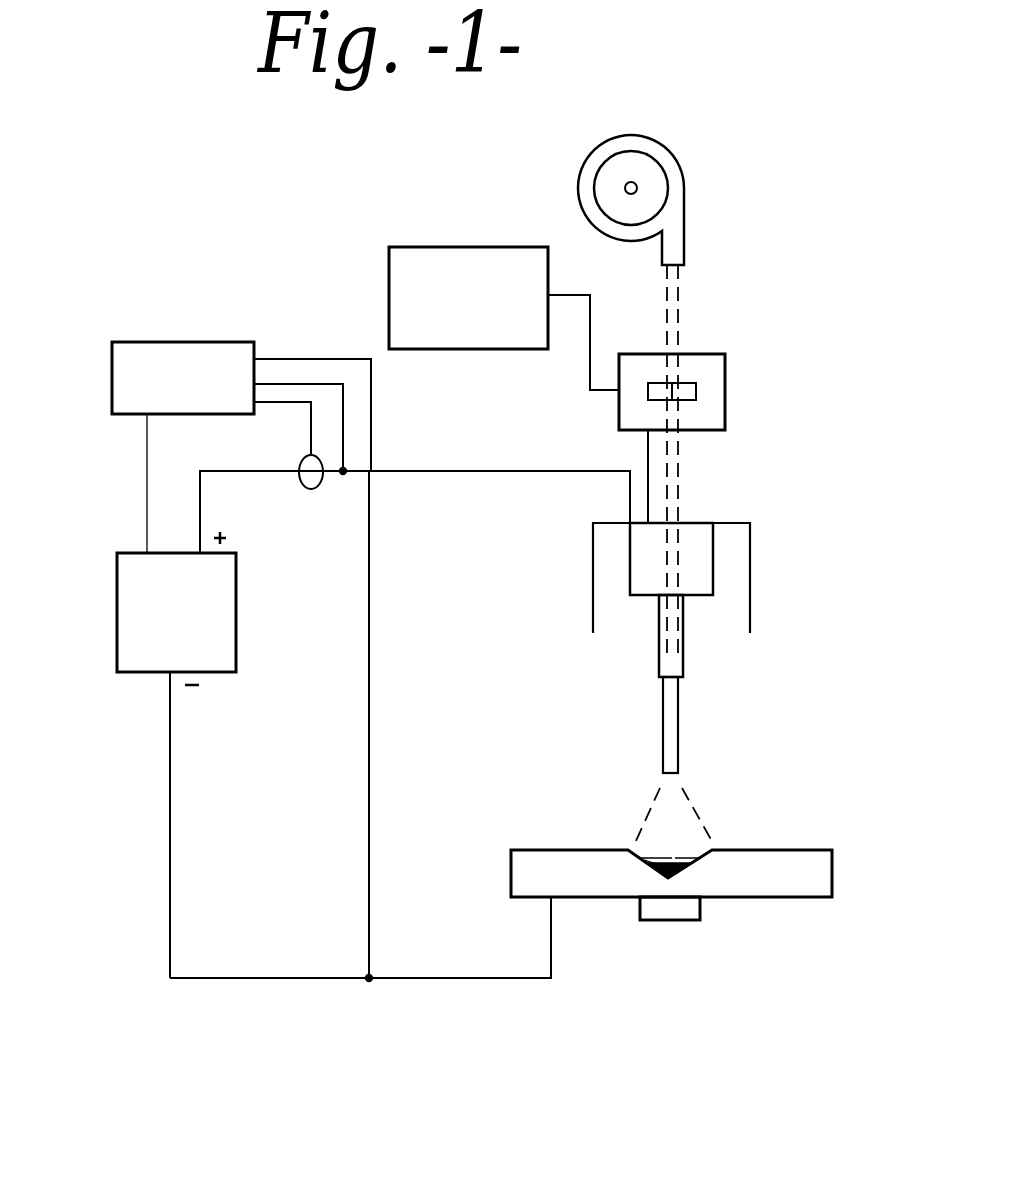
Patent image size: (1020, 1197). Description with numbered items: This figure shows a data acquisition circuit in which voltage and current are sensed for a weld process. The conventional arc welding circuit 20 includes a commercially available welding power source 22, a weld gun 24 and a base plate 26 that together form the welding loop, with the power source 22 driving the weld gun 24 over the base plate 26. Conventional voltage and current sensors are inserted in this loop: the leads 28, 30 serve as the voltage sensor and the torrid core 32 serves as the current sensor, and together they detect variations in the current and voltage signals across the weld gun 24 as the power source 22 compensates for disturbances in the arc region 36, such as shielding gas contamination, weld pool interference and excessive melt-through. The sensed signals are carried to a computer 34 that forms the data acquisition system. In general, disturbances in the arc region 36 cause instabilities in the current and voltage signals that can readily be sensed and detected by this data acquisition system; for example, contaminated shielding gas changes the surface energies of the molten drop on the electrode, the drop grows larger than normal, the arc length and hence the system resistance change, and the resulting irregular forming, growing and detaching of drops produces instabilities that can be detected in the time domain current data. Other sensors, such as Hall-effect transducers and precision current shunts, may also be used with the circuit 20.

The arc welding circuit 20 is at (447, 210).
The welding power source 22 is at (117, 626).
The weld gun 24 is at (700, 511).
The base plate 26 is at (742, 897).
The lead 28 is at (369, 633).
The lead 30 is at (273, 384).
The torrid core 32 is at (311, 418).
The computer 34 is at (165, 342).
The arc region 36 is at (645, 822).